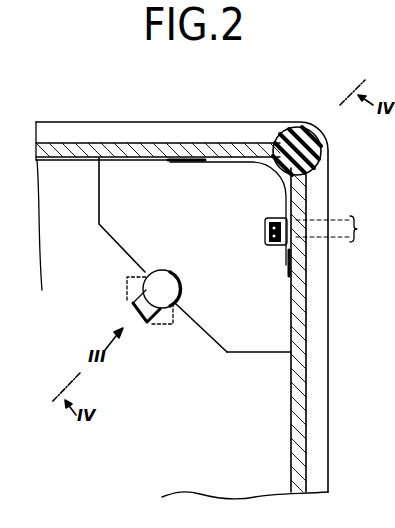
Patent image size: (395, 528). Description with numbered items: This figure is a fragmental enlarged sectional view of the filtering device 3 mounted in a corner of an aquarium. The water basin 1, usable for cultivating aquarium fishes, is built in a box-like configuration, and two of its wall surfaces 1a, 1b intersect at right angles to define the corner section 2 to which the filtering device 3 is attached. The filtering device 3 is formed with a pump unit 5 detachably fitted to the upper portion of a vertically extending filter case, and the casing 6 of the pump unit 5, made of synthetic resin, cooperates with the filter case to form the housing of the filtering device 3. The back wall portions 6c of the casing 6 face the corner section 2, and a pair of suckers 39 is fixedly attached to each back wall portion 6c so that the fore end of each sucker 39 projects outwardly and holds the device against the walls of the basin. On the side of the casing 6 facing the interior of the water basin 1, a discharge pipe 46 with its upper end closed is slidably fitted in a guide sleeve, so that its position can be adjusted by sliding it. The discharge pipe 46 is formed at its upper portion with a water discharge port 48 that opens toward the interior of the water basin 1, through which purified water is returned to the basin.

The water basin 1 is at (314, 417).
The wall surface 1a is at (250, 157).
The wall surface 1b is at (297, 127).
The corner section 2 is at (305, 96).
The filtering device 3 is at (205, 347).
The pump unit 5 is at (104, 238).
The casing 6 is at (262, 345).
The back wall portion 6c is at (292, 281).
The sucker 39 is at (187, 158).
The discharge pipe 46 is at (172, 287).
The water discharge port 48 is at (148, 325).